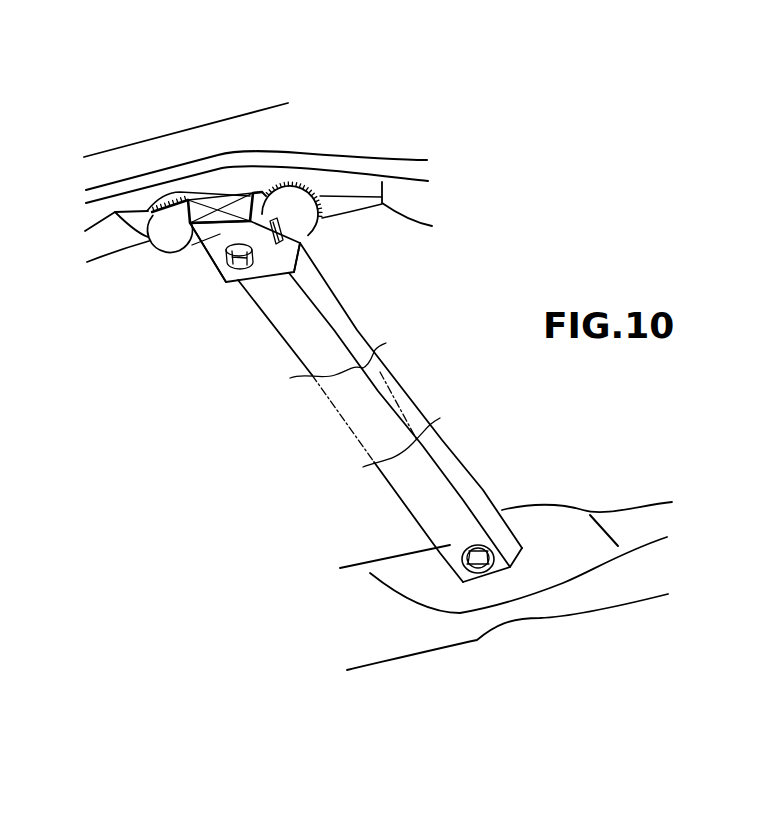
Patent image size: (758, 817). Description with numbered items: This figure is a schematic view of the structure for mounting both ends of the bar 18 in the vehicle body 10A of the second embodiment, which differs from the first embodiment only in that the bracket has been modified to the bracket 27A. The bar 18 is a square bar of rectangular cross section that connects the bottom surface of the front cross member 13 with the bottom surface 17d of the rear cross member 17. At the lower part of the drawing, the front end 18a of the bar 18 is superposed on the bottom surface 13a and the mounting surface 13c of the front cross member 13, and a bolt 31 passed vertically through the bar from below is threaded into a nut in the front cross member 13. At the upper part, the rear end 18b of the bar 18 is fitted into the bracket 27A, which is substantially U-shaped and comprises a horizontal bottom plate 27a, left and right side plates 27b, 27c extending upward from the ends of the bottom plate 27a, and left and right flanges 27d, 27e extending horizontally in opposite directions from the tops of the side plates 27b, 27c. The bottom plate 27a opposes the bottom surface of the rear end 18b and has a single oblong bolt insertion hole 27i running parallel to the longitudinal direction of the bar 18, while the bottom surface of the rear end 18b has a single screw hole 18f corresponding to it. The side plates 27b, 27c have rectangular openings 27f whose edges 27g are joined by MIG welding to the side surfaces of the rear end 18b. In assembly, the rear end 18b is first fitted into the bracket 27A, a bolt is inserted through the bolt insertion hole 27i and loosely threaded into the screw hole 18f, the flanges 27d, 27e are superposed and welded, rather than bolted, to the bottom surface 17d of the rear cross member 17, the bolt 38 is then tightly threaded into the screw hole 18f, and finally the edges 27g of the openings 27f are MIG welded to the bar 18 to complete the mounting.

The vehicle body 10A is at (546, 186).
The rear cross member 17 is at (220, 119).
The bottom surface 17d is at (136, 224).
The connecting bar 18 is at (364, 327).
The front end 18a is at (447, 546).
The rear end 18b is at (208, 200).
The screw hole 18f is at (191, 248).
The bracket 27A is at (286, 278).
The bottom plate 27a is at (278, 273).
The left side plate 27b is at (178, 222).
The right side plate 27c is at (299, 250).
The left flange 27d is at (150, 248).
The right flange 27e is at (312, 195).
The rectangular opening 27f is at (292, 215).
The edge 27g is at (274, 198).
The bolt insertion hole 27i is at (216, 235).
The bolt 38 is at (238, 268).
The bolt 31 is at (482, 567).
The front cross member 13 is at (654, 598).
The bottom surface 13a is at (612, 591).
The mounting surface 13c is at (547, 552).